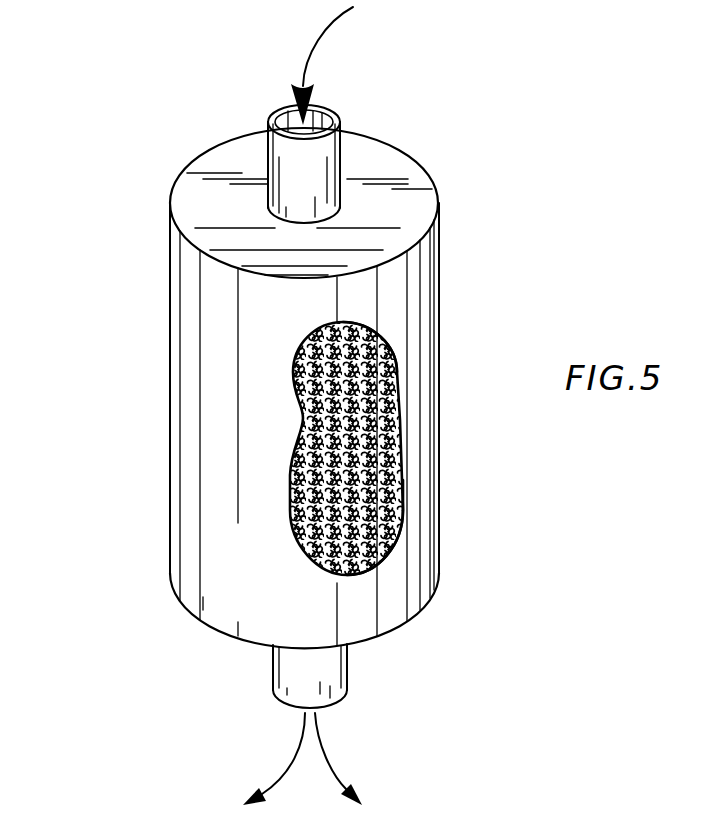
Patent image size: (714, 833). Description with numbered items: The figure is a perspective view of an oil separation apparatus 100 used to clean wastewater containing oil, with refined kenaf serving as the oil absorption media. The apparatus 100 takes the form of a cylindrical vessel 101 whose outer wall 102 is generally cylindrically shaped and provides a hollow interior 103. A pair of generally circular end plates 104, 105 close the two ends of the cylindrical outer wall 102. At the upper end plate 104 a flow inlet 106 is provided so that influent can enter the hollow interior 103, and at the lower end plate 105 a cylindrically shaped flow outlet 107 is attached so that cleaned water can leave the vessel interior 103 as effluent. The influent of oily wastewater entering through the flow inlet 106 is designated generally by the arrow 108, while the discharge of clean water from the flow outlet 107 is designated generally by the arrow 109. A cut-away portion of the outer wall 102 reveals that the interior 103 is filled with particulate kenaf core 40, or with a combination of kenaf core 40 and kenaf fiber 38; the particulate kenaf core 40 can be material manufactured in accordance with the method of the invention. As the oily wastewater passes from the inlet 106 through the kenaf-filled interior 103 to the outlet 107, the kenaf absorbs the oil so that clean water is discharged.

The oil separation apparatus 100 is at (148, 548).
The cylindrical vessel 101 is at (178, 451).
The outer wall 102 is at (300, 590).
The hollow interior 103 is at (390, 362).
The end plate 104 is at (417, 211).
The end plate 105 is at (226, 636).
The flow inlet 106 is at (315, 152).
The flow outlet 107 is at (331, 699).
The arrow (influent) 108 is at (322, 38).
The arrow (effluent) 109 is at (287, 767).
The kenaf fiber 38 is at (303, 424).
The particulate kenaf core 40 is at (393, 509).